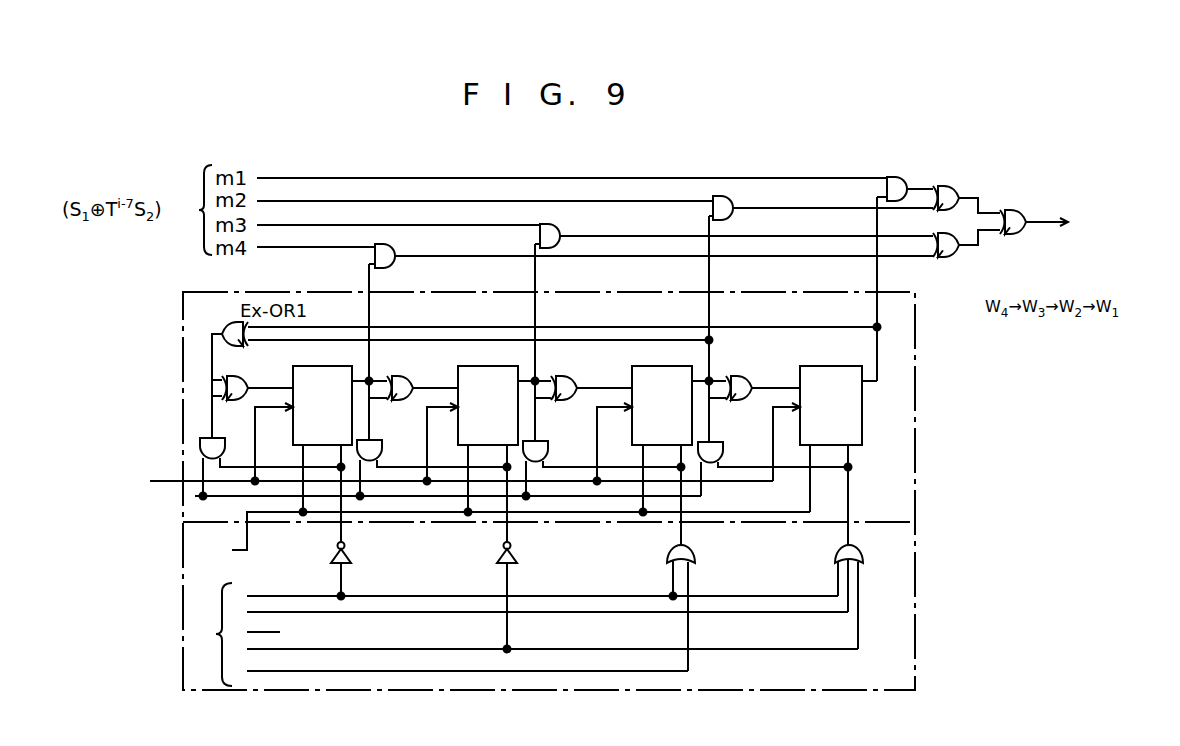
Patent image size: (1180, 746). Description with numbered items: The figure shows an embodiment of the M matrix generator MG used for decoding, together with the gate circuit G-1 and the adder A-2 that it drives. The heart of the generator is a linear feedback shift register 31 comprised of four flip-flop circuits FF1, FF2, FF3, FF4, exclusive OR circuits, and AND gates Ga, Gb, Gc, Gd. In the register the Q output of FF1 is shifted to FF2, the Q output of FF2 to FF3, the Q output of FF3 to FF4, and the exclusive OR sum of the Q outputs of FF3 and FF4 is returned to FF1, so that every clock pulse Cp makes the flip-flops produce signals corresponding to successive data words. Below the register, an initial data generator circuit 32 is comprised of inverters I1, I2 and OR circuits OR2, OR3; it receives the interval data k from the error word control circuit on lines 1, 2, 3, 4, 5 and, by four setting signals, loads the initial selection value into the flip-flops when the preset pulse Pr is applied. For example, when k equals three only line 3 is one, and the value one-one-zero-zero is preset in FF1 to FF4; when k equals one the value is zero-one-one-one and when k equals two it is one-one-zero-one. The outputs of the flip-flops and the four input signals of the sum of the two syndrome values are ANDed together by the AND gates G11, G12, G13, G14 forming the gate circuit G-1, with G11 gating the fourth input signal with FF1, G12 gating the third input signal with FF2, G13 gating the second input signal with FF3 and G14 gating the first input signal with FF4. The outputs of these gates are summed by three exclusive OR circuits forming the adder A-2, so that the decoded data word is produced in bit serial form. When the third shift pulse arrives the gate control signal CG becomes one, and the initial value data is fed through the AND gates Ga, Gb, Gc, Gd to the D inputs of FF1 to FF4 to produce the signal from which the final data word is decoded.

The linear feedback shift register 31 is at (537, 453).
The initial data generator circuit 32 is at (556, 576).
The M matrix generator MG is at (920, 526).
The gate circuit G-1 is at (648, 169).
The adder A-2 is at (998, 154).
The flip-flop circuit FF1 is at (322, 395).
The flip-flop circuit FF2 is at (488, 394).
The flip-flop circuit FF3 is at (662, 394).
The flip-flop circuit FF4 is at (831, 394).
The AND gate G11 is at (651, 249).
The AND gate G12 is at (734, 231).
The AND gate G13 is at (821, 203).
The AND gate G14 is at (906, 181).
The AND gate Ga is at (262, 458).
The AND gate Gb is at (432, 458).
The AND gate Gc is at (602, 458).
The AND gate Gd is at (773, 458).
The OR circuit OR2 is at (702, 608).
The OR circuit OR3 is at (870, 597).
The inverter I1 is at (350, 569).
The inverter I2 is at (516, 595).
The line 1 is at (533, 596).
The line 2 is at (538, 612).
The line 3 is at (254, 632).
The line 4 is at (543, 649).
The line 5 is at (458, 671).